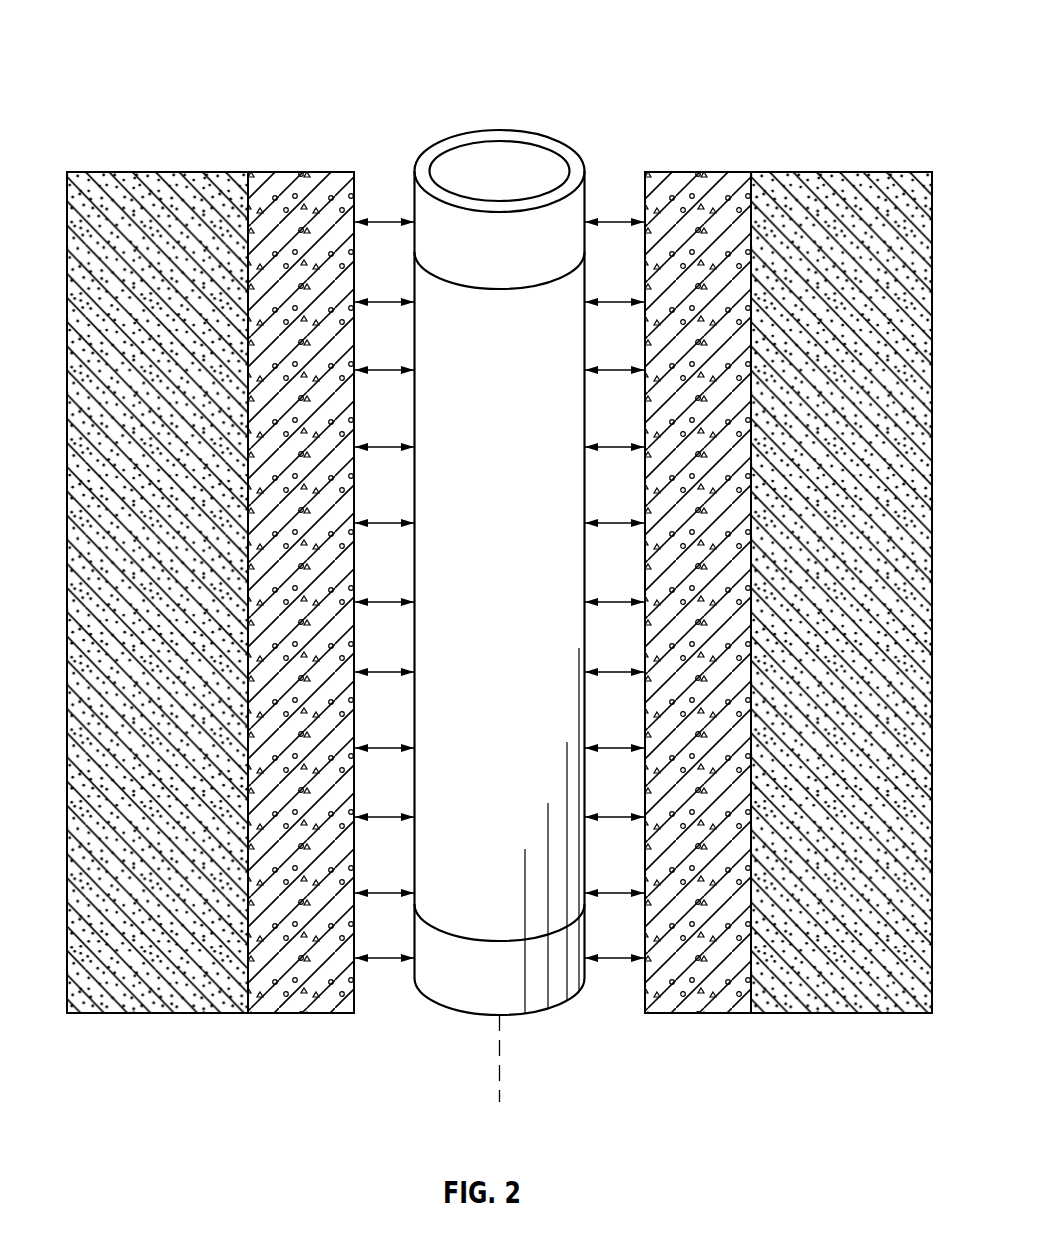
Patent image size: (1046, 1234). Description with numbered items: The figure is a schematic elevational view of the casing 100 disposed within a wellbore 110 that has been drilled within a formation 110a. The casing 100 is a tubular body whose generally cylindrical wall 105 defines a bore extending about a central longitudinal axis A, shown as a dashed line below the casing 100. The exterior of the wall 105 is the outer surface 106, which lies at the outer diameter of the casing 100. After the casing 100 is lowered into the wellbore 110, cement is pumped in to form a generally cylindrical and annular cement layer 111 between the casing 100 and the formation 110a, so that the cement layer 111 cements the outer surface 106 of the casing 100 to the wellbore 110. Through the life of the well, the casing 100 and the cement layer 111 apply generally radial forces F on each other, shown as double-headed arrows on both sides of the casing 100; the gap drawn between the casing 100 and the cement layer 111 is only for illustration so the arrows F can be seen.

The casing 100 is at (331, 26).
The wall 105 is at (537, 142).
The outer surface 106 is at (415, 790).
The wellbore 110 is at (248, 172).
The formation 110a is at (180, 246).
The cement layer 111 is at (320, 246).
The central longitudinal axis A is at (498, 1041).
The radial forces F is at (499, 570).